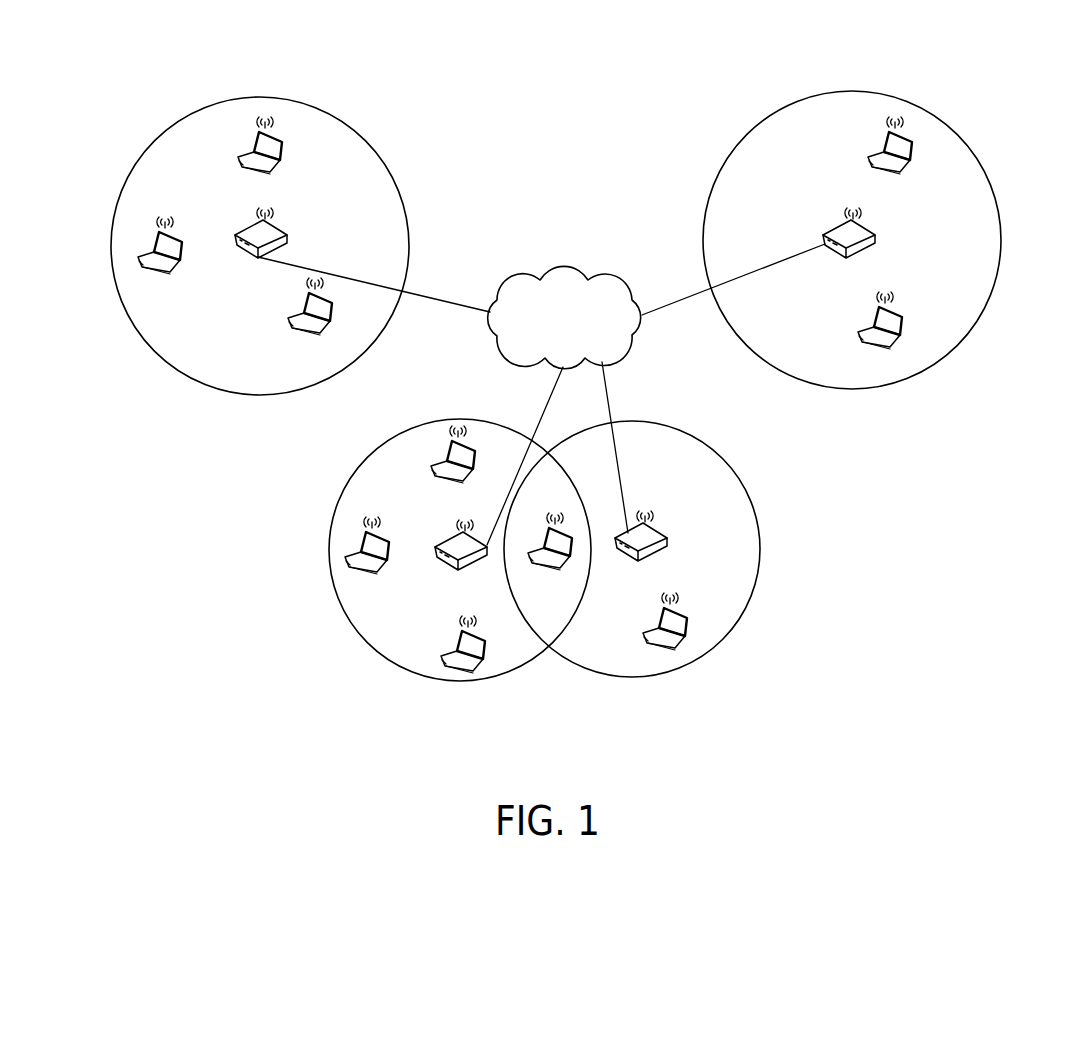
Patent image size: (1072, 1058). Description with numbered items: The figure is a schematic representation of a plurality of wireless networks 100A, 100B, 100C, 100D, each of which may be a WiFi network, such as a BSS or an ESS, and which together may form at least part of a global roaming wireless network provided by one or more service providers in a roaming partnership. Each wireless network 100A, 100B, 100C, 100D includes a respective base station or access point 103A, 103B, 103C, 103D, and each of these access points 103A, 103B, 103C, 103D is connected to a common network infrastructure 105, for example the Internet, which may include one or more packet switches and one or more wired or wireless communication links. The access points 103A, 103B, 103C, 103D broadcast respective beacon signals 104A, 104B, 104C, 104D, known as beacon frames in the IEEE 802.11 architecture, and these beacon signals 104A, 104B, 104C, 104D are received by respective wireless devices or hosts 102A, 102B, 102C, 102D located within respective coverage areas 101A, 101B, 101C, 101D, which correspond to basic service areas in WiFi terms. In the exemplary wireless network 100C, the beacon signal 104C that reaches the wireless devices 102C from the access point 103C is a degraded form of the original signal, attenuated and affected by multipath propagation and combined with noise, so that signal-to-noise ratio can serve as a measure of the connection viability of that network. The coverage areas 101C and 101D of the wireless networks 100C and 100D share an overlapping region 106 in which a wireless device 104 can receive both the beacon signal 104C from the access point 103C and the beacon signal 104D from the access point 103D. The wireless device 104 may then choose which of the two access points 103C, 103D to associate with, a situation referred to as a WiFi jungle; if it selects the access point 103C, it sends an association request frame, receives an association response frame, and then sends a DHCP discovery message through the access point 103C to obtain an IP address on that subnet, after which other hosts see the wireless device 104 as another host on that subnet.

The wireless network 100A is at (93, 213).
The wireless network 100B is at (1002, 418).
The wireless network 100C is at (795, 707).
The wireless network 100D is at (202, 747).
The coverage area 101A is at (350, 128).
The coverage area 101B is at (725, 158).
The coverage area 101C is at (680, 426).
The coverage area 101D is at (347, 483).
The wireless devices 102A is at (240, 157).
The wireless devices 102B is at (912, 140).
The wireless devices 102C is at (688, 620).
The wireless devices 102D is at (445, 458).
The access point 103A is at (285, 233).
The access point 103B is at (845, 256).
The access point 103C is at (665, 537).
The access point 103D is at (457, 567).
The beacon signal 104A is at (277, 212).
The beacon signal 104B is at (850, 212).
The beacon signal 104C is at (650, 518).
The beacon signal 104D is at (462, 523).
The wireless device 104 is at (565, 560).
The network infrastructure 105 is at (565, 267).
The overlapping region 106 is at (548, 587).